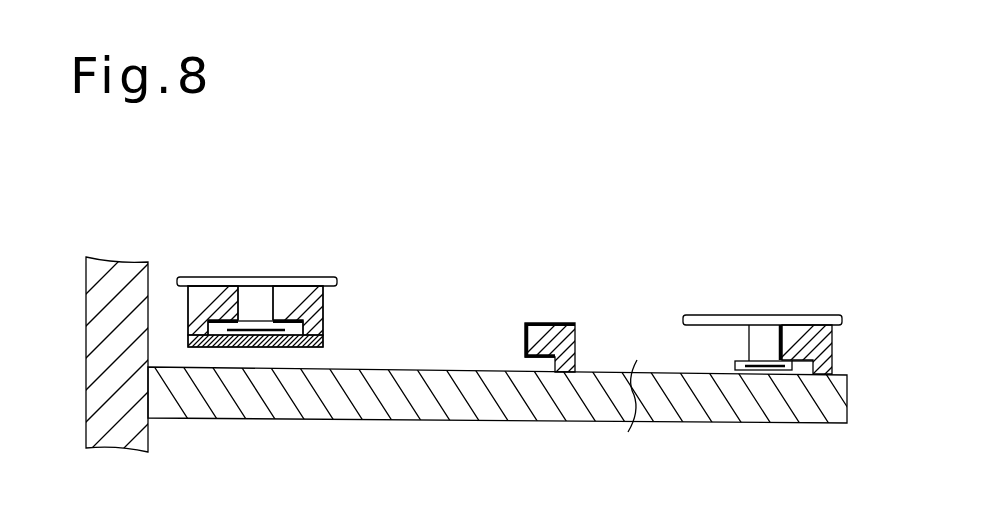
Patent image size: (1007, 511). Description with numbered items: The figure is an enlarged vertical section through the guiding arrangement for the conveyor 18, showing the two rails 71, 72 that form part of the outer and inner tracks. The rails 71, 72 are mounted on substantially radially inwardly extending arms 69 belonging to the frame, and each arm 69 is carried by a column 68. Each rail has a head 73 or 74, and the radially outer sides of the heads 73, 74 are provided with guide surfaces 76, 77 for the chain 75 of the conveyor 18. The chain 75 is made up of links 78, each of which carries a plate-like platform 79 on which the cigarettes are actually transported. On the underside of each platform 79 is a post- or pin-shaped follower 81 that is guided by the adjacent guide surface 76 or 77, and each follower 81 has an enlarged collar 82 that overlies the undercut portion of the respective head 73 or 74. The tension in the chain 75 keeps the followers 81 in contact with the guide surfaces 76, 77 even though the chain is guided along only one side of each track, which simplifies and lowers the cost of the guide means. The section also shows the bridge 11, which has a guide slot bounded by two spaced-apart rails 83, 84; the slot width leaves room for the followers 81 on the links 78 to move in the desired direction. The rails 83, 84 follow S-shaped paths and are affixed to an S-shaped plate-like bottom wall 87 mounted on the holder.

The bridge 11 is at (338, 303).
The conveyor 18 is at (263, 258).
The column 68 is at (125, 277).
The arm 69 is at (388, 404).
The rail 71 is at (584, 336).
The rail 72 is at (866, 345).
The head 73 is at (550, 322).
The head 74 is at (803, 330).
The chain 75 is at (326, 270).
The guide surface 76 is at (521, 336).
The guide surface 77 is at (777, 345).
The link 78 is at (762, 376).
The platform 79 is at (300, 278).
The follower 81 is at (255, 305).
The collar 82 is at (234, 337).
The rail 83 is at (314, 322).
The rail 84 is at (201, 312).
The bottom wall 87 is at (270, 334).